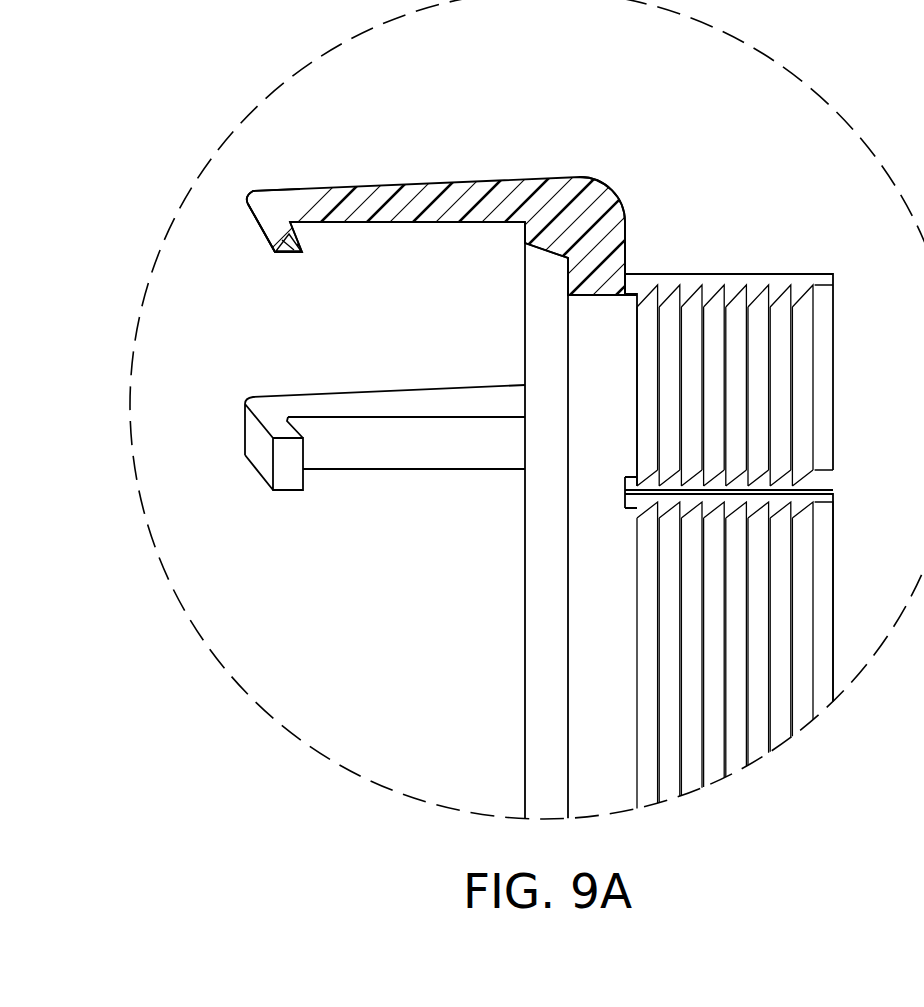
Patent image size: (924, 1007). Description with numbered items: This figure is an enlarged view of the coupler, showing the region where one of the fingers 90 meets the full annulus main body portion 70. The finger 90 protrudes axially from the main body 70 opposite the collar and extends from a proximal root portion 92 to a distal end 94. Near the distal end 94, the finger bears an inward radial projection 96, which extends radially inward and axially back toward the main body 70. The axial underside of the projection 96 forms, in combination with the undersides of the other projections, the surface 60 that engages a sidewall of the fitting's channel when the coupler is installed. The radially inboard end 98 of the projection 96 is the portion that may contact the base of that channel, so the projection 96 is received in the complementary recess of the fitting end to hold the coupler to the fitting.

The finger 90 is at (444, 183).
The proximal root portion 92 is at (598, 206).
The distal end 94 is at (233, 216).
The inward radial projection 96 is at (276, 250).
The surface 60 is at (294, 240).
The main body portion 70 is at (616, 269).
The radially inboard end 98 is at (292, 254).